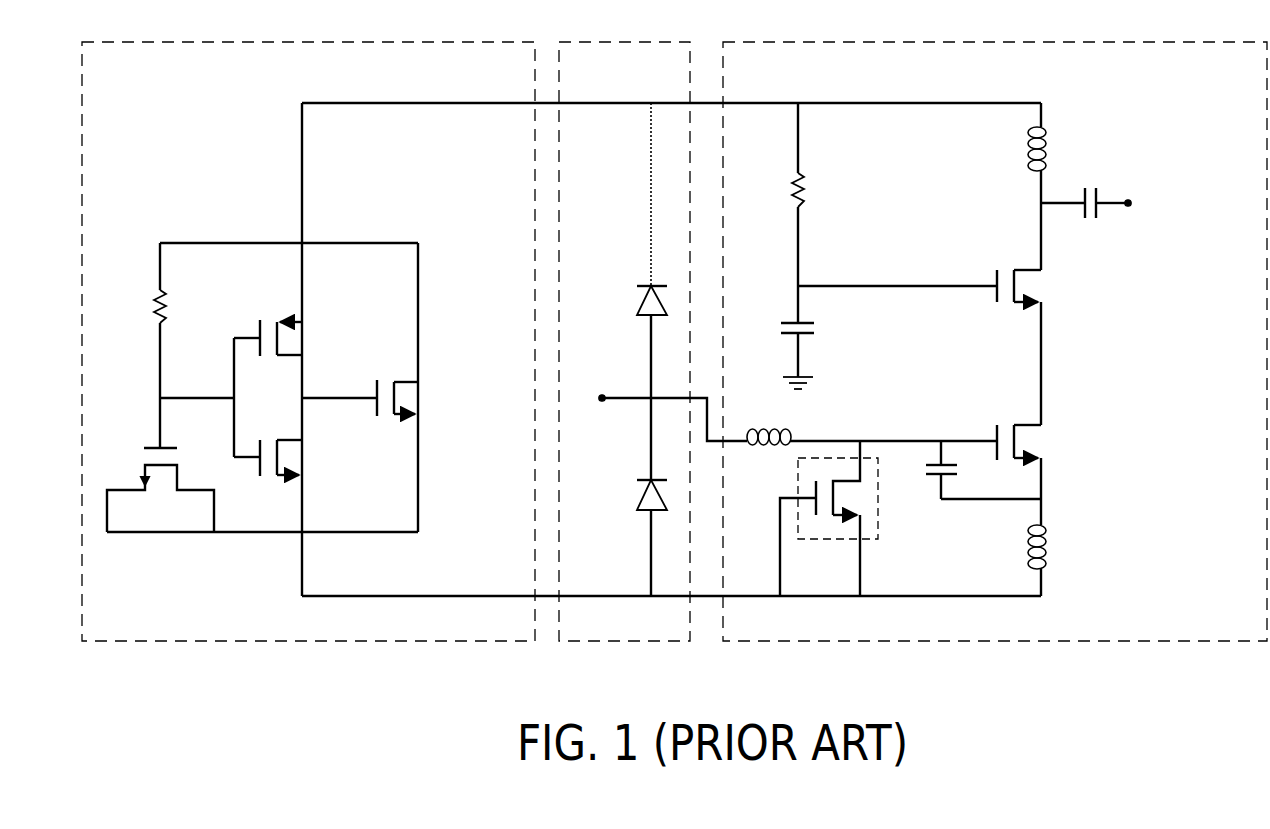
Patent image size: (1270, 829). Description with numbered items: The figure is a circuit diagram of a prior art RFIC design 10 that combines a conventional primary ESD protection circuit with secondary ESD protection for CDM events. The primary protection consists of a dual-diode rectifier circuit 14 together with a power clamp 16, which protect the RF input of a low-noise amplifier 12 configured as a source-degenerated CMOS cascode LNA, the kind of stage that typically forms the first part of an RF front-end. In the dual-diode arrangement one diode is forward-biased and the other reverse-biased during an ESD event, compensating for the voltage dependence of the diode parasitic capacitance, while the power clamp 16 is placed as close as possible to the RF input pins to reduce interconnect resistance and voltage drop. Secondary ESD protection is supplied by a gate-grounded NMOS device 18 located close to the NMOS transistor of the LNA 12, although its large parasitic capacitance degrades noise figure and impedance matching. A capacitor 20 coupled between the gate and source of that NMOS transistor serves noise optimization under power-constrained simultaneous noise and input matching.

The prior art RFIC design 10 is at (203, 698).
The low-noise amplifier 12 is at (1010, 42).
The dual-diode rectifier circuit 14 is at (605, 42).
The power clamp 16 is at (228, 42).
The gate-grounded NMOS device 18 is at (820, 540).
The capacitor 20 is at (957, 475).